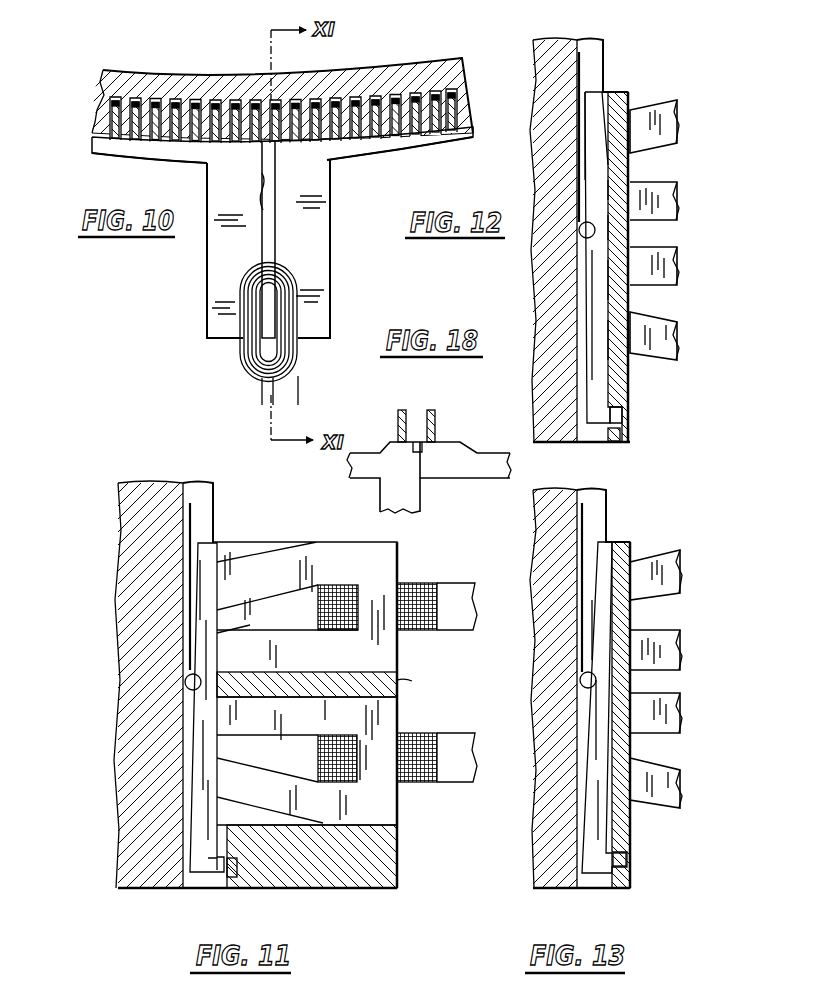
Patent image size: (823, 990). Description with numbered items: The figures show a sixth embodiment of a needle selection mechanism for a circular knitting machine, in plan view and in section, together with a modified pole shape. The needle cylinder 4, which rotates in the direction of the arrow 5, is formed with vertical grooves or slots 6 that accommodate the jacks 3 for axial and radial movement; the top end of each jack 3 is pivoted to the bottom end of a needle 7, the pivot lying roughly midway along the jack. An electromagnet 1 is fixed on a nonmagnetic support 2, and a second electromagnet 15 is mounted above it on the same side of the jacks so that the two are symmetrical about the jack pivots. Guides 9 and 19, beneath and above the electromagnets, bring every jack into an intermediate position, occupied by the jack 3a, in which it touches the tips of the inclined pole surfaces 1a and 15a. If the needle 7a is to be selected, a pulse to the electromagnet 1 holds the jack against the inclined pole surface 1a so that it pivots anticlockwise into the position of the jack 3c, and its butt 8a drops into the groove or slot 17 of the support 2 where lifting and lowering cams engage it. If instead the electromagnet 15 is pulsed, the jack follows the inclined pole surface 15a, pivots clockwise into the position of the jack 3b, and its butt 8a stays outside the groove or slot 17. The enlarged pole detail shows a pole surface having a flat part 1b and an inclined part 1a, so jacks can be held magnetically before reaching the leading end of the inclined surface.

In FIG. 18, the electromagnet 1 is at (382, 507).
In FIG. 12, the electromagnet 1 is at (665, 287).
In FIG. 11, the electromagnet 1 is at (399, 800).
In FIG. 13, the electromagnet 1 is at (667, 735).
In FIG. 18, the inclined pole surface 1a is at (391, 442).
In FIG. 11, the inclined pole surface 1a is at (233, 733).
In FIG. 18, the flat part 1b is at (420, 444).
In FIG. 10, the support 2 is at (210, 300).
In FIG. 11, the support 2 is at (400, 858).
In FIG. 10, the jack 3 is at (100, 132).
In FIG. 12, the jack 3 is at (597, 257).
In FIG. 11, the jack 3 is at (197, 775).
In FIG. 13, the jack 3 is at (597, 707).
In FIG. 10, the jack 3a is at (283, 142).
In FIG. 12, the jack 3a is at (604, 377).
In FIG. 13, the jack 3a is at (600, 826).
In FIG. 10, the jack 3b is at (252, 147).
In FIG. 10, the jack 3c is at (206, 160).
In FIG. 10, the needle cylinder 4 is at (220, 86).
In FIG. 12, the needle cylinder 4 is at (580, 240).
In FIG. 11, the needle cylinder 4 is at (122, 723).
In FIG. 13, the needle cylinder 4 is at (580, 688).
In FIG. 10, the arrow 5 is at (362, 54).
In FIG. 10, the groove or slot 6 is at (108, 112).
In FIG. 12, the groove or slot 6 is at (602, 66).
In FIG. 11, the groove or slot 6 is at (193, 490).
In FIG. 13, the groove or slot 6 is at (603, 516).
In FIG. 10, the needle 7 is at (113, 102).
In FIG. 10, the needle 7a is at (275, 100).
In FIG. 12, the needle 7a is at (580, 80).
In FIG. 11, the needle 7a is at (192, 502).
In FIG. 13, the needle 7a is at (583, 530).
In FIG. 12, the butt 8a is at (615, 413).
In FIG. 11, the butt 8a is at (212, 876).
In FIG. 13, the butt 8a is at (598, 876).
In FIG. 11, the guide 9 is at (220, 816).
In FIG. 10, the second electromagnet 15 is at (276, 235).
In FIG. 12, the second electromagnet 15 is at (663, 193).
In FIG. 11, the second electromagnet 15 is at (397, 560).
In FIG. 13, the second electromagnet 15 is at (666, 643).
In FIG. 10, the inclined pole surface 15a is at (262, 174).
In FIG. 11, the inclined pole surface 15a is at (230, 600).
In FIG. 12, the groove or slot 17 is at (614, 441).
In FIG. 11, the groove or slot 17 is at (233, 878).
In FIG. 13, the groove or slot 17 is at (628, 862).
In FIG. 10, the guide 19 is at (375, 150).
In FIG. 11, the guide 19 is at (217, 549).